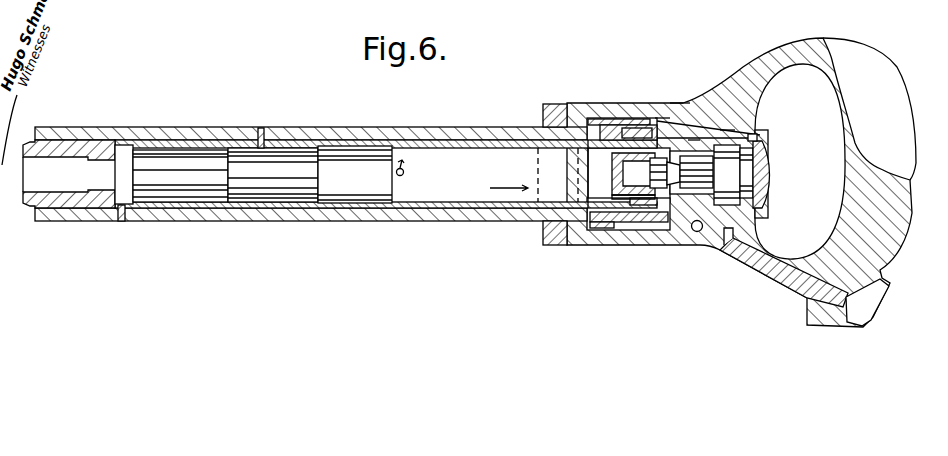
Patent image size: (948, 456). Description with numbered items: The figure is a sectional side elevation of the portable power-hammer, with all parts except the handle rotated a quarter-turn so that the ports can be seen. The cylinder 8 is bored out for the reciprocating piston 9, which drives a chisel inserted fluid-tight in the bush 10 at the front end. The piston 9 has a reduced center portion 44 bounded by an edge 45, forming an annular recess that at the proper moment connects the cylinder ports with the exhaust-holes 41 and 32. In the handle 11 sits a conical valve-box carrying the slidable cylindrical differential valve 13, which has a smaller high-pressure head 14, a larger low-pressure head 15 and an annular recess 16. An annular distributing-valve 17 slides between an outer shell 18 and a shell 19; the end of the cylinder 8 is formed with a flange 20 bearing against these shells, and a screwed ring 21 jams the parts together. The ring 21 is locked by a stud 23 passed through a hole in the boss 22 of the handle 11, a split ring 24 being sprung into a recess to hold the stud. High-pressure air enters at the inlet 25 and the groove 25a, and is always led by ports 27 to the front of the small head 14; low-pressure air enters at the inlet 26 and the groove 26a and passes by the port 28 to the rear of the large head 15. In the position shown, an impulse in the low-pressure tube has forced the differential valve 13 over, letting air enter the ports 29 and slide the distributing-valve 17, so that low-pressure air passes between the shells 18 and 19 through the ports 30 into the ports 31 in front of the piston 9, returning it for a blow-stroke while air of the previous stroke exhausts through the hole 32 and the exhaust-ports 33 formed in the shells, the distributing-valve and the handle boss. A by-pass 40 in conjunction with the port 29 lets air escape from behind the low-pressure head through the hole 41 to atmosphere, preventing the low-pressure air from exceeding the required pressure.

The cylinder 8 is at (218, 127).
The piston 9 is at (186, 190).
The bush 10 is at (52, 158).
The handle 11 is at (892, 225).
The differential valve 13 is at (733, 242).
The smaller head of differential valve 14 is at (677, 229).
The larger head of differential valve 15 is at (731, 165).
The annular recess 16 is at (698, 127).
The annular distributing-valve 17 is at (658, 122).
The outer shell 18 is at (612, 120).
The shell 19 is at (588, 150).
The flange 20 is at (588, 230).
The screwed ring 21 is at (545, 233).
The boss of the handle 22 is at (680, 104).
The stud 23 is at (583, 240).
The split ring 24 is at (558, 103).
The high-pressure inlet 25 is at (698, 232).
The groove 25a is at (693, 140).
The low-pressure inlet 26 is at (788, 273).
The groove 26a is at (728, 130).
The port 27 is at (616, 172).
The port 28 is at (756, 207).
The ports 29 is at (457, 129).
The port 30 is at (605, 208).
The port 31 is at (500, 212).
The hole 32 is at (405, 171).
The exhaust-ports 33 is at (628, 120).
The by-pass 40 is at (764, 146).
The hole 41 is at (384, 205).
The reduced center portion 44 is at (259, 187).
The edge 45 is at (233, 161).